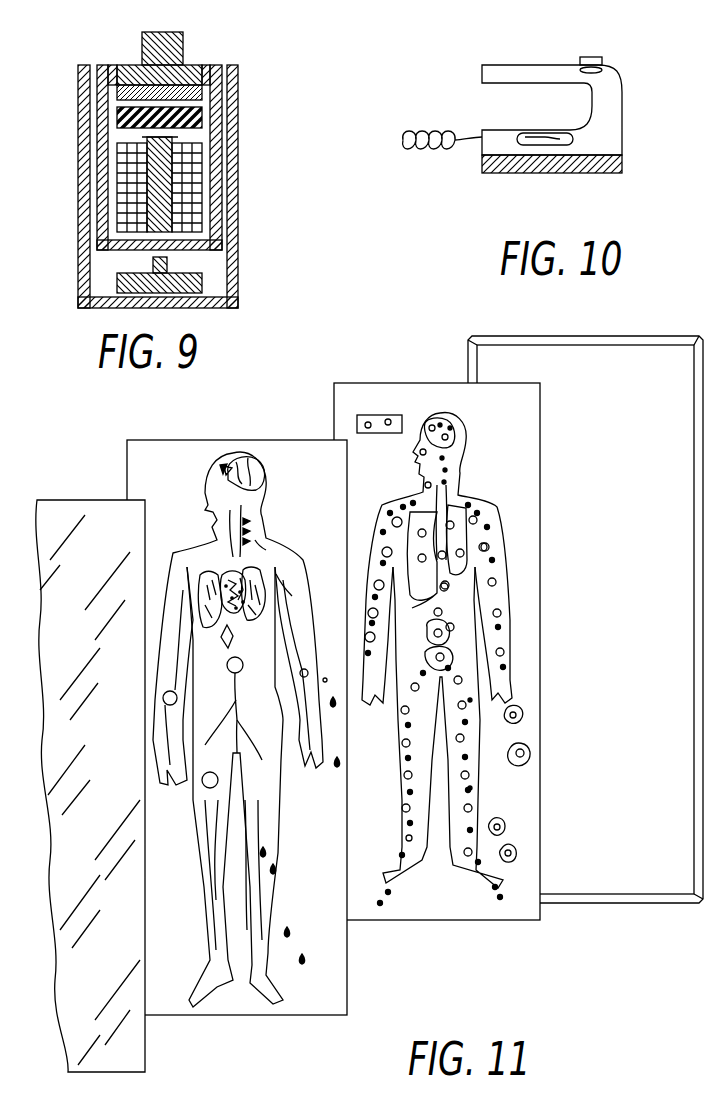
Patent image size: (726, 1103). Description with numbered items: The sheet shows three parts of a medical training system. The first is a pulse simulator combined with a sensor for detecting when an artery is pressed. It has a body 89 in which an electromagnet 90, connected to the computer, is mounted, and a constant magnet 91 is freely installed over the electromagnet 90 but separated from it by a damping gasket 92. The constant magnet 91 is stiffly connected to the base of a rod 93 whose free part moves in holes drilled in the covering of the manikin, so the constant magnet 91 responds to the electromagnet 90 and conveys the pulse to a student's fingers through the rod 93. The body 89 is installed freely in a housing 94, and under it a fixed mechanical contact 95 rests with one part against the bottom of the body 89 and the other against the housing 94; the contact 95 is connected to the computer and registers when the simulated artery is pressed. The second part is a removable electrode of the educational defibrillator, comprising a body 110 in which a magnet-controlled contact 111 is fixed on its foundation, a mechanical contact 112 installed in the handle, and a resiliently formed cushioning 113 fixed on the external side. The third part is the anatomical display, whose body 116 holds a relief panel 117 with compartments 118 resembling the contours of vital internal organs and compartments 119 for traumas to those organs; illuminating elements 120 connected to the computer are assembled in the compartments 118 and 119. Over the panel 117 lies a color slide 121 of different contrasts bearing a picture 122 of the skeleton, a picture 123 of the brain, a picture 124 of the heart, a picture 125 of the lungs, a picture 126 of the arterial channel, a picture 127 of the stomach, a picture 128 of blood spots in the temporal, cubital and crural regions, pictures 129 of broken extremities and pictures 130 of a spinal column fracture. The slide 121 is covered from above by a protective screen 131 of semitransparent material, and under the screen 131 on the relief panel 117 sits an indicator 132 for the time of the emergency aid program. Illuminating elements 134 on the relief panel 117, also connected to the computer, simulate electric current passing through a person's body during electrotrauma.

In FIG. 9, the body 89 is at (108, 135).
In FIG. 9, the electromagnet 90 is at (133, 183).
In FIG. 9, the constant magnet 91 is at (127, 88).
In FIG. 9, the damping gasket 92 is at (200, 118).
In FIG. 9, the rod 93 is at (170, 43).
In FIG. 9, the housing 94 is at (237, 253).
In FIG. 9, the mechanical contact 95 is at (123, 278).
In FIG. 10, the body 110 is at (615, 120).
In FIG. 10, the contact 111 is at (525, 147).
In FIG. 10, the mechanical contact 112 is at (608, 72).
In FIG. 10, the cushioning 113 is at (618, 165).
In FIG. 11, the body 116 is at (674, 925).
In FIG. 11, the relief panel 117 is at (525, 407).
In FIG. 11, the compartments 118 is at (463, 437).
In FIG. 11, the compartments 119 is at (527, 712).
In FIG. 11, the illuminating elements 120 is at (452, 625).
In FIG. 11, the color slide 121 is at (147, 465).
In FIG. 11, the picture of the skeleton 122 is at (250, 513).
In FIG. 11, the picture of the brain 123 is at (255, 462).
In FIG. 11, the picture of the heart 124 is at (212, 575).
In FIG. 11, the picture of the lungs 125 is at (260, 543).
In FIG. 11, the picture of the arterial channel 126 is at (282, 580).
In FIG. 11, the picture of the stomach 127 is at (193, 615).
In FIG. 11, the picture of blood spots 128 is at (310, 963).
In FIG. 11, the pictures of broken extremities 129 is at (203, 785).
In FIG. 11, the pictures of a spinal column fracture 130 is at (227, 664).
In FIG. 11, the protective screen 131 is at (98, 515).
In FIG. 11, the indicator 132 is at (385, 413).
In FIG. 11, the illuminating elements 134 is at (470, 788).